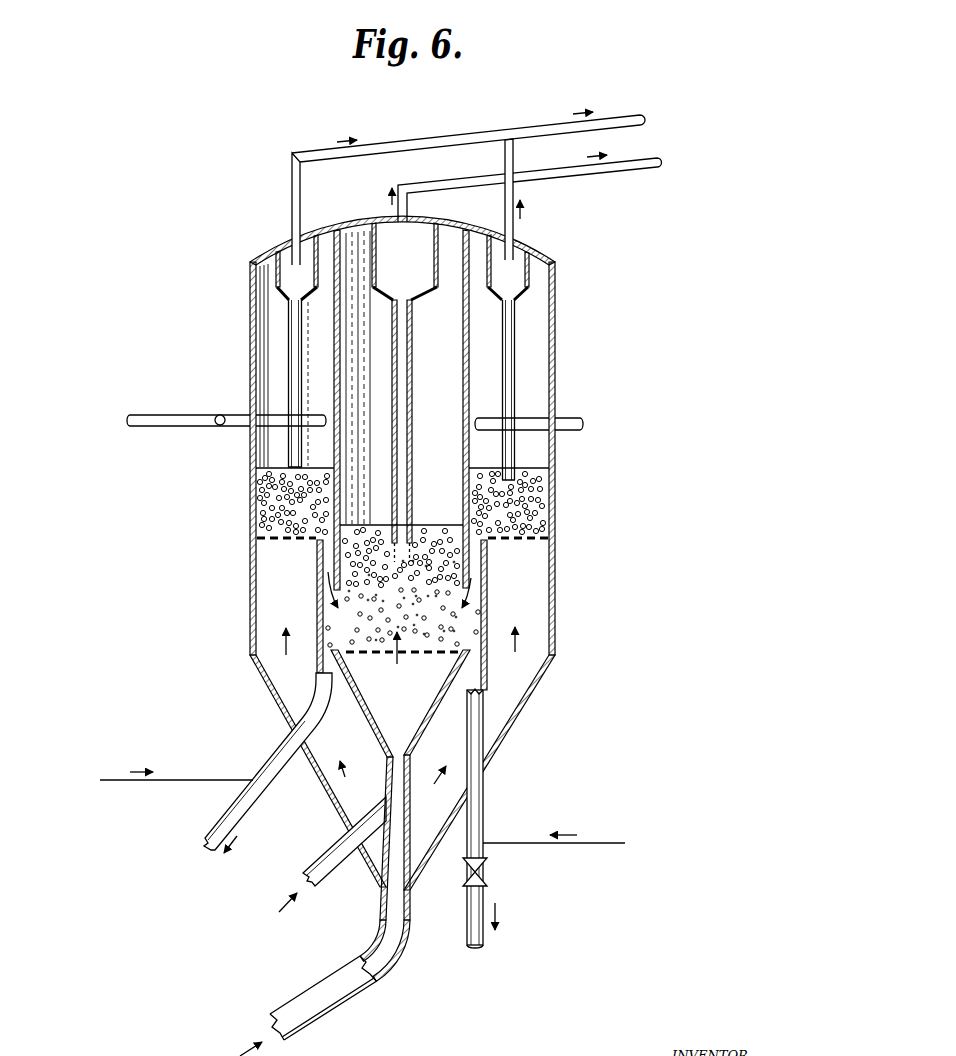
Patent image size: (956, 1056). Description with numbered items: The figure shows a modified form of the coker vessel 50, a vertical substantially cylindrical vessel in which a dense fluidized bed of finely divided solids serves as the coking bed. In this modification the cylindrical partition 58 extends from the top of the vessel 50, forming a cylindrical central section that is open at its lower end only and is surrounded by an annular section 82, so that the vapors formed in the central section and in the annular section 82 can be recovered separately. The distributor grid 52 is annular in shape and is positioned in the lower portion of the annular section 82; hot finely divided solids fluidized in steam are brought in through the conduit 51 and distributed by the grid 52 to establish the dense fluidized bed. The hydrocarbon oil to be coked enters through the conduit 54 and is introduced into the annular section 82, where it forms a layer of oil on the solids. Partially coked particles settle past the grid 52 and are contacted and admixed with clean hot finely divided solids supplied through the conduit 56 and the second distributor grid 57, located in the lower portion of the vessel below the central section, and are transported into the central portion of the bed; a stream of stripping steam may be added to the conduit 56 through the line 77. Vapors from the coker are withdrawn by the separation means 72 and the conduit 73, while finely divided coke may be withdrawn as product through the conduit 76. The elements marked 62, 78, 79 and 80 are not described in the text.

The coker vessel 50 is at (557, 340).
The conduit 51 is at (300, 995).
The distributor grid 52 is at (273, 543).
The conduit 54 is at (192, 410).
The conduit 56 is at (310, 888).
The distributor grid 57 is at (410, 652).
The cylindrical partition 58 is at (469, 380).
The steam supply line 62 is at (210, 762).
The separation means 72 is at (414, 300).
The conduit 73 is at (444, 170).
The conduit 76 is at (490, 784).
The line 77 is at (619, 828).
The side vapor tube 78 is at (302, 300).
The side vapor outlet pipe 79 is at (292, 197).
The vapor outlet header 80 is at (449, 122).
The annular section 82 is at (273, 343).